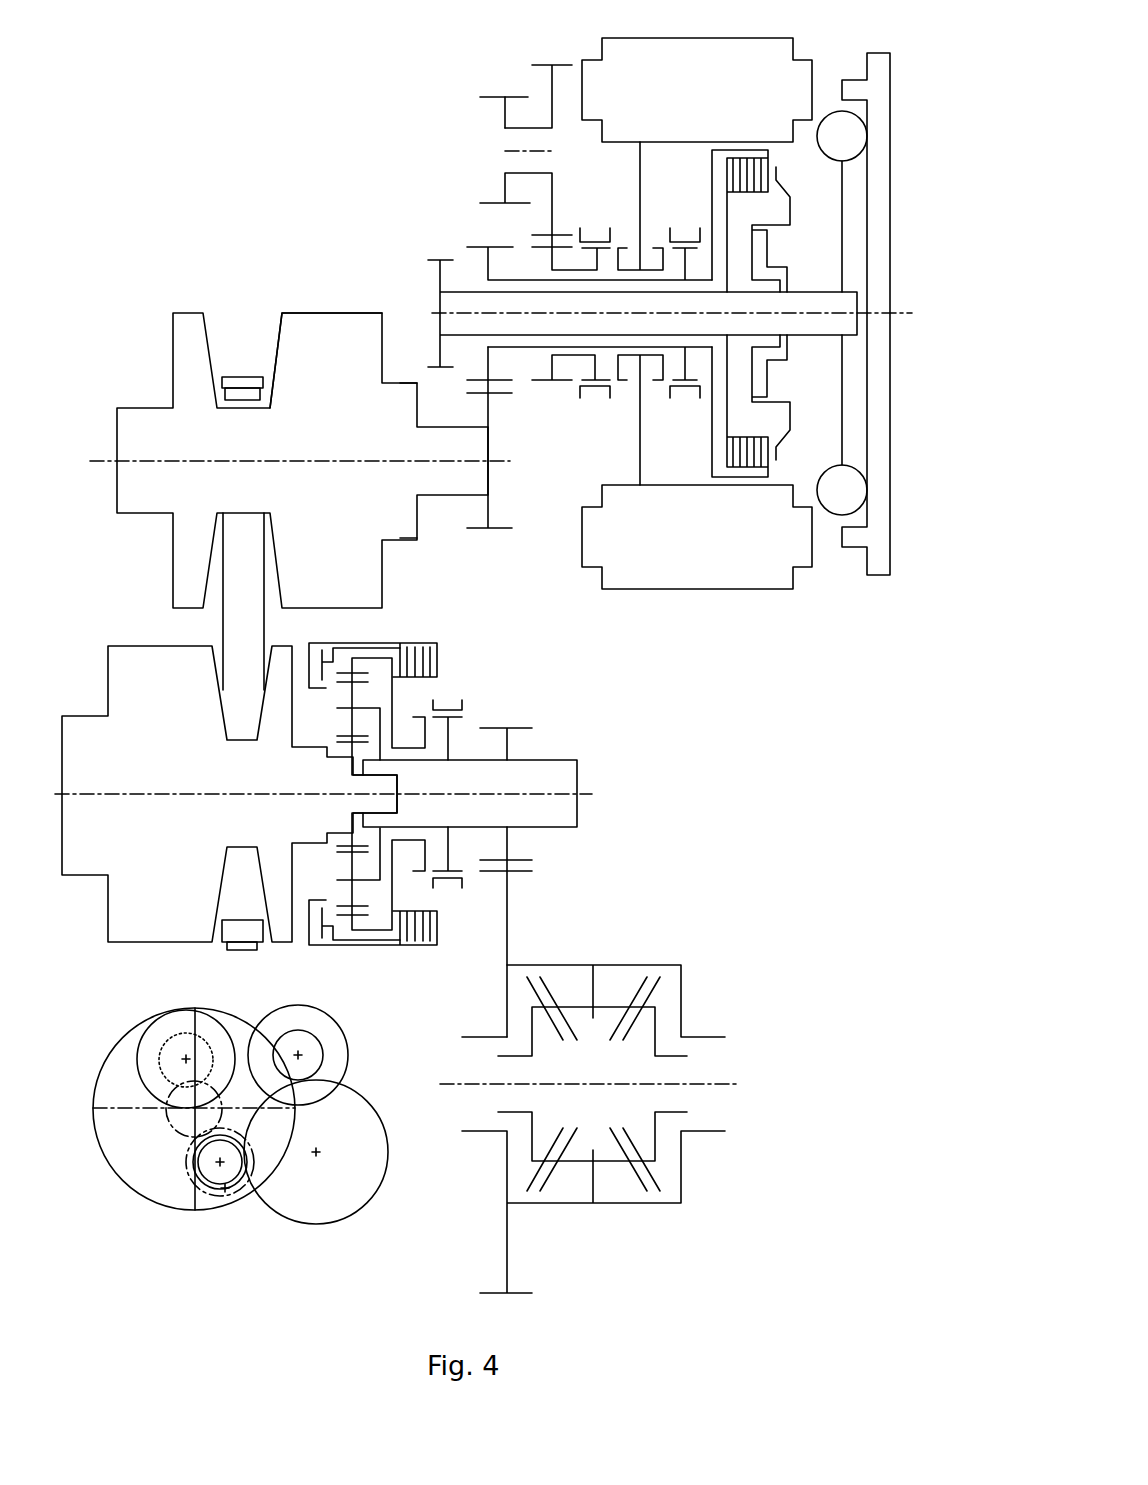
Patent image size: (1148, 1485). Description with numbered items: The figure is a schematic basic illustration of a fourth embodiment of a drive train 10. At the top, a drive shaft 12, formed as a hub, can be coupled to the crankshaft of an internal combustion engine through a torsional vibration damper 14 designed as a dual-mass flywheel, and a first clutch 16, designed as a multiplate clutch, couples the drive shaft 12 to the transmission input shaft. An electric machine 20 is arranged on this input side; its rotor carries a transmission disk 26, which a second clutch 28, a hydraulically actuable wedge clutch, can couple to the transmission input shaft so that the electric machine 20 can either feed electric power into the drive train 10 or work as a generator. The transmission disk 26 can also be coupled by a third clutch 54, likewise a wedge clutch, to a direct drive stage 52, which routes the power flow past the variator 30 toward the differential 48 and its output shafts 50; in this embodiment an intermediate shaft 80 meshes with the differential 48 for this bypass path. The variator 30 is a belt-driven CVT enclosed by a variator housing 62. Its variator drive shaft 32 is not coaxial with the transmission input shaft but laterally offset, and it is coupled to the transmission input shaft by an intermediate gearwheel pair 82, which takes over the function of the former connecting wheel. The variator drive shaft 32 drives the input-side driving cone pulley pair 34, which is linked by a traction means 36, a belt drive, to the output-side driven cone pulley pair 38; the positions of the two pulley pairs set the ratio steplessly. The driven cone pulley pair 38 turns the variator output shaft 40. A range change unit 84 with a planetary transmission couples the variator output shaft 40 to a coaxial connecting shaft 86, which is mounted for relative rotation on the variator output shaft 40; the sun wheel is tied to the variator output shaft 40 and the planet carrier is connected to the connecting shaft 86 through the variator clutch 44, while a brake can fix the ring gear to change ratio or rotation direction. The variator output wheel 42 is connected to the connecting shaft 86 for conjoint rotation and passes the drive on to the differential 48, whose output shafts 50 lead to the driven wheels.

The drive train 10 is at (756, 751).
The drive shaft 12 is at (805, 303).
The torsional vibration damper 14 is at (878, 152).
The first clutch 16 is at (781, 164).
The electric machine 20 is at (777, 500).
The transmission disk 26 is at (643, 155).
The second clutch 28 is at (684, 218).
The variator 30 is at (182, 282).
The variator drive shaft 32 is at (437, 423).
The driving cone pulley pair 34 is at (275, 331).
The traction means 36 is at (243, 555).
The driven cone pulley pair 38 is at (216, 866).
The variator output shaft 40 is at (398, 784).
The variator output wheel 42 is at (515, 728).
The variator clutch 44 is at (468, 882).
The differential 48 is at (641, 956).
The output shafts 50 is at (670, 1056).
The direct drive stage 52 is at (534, 99).
The third clutch 54 is at (594, 215).
The variator housing 62 is at (320, 948).
The intermediate shaft 80 is at (523, 127).
The intermediate gearwheel pair 82 is at (508, 402).
The range change unit 84 is at (422, 628).
The connecting shaft 86 is at (560, 805).